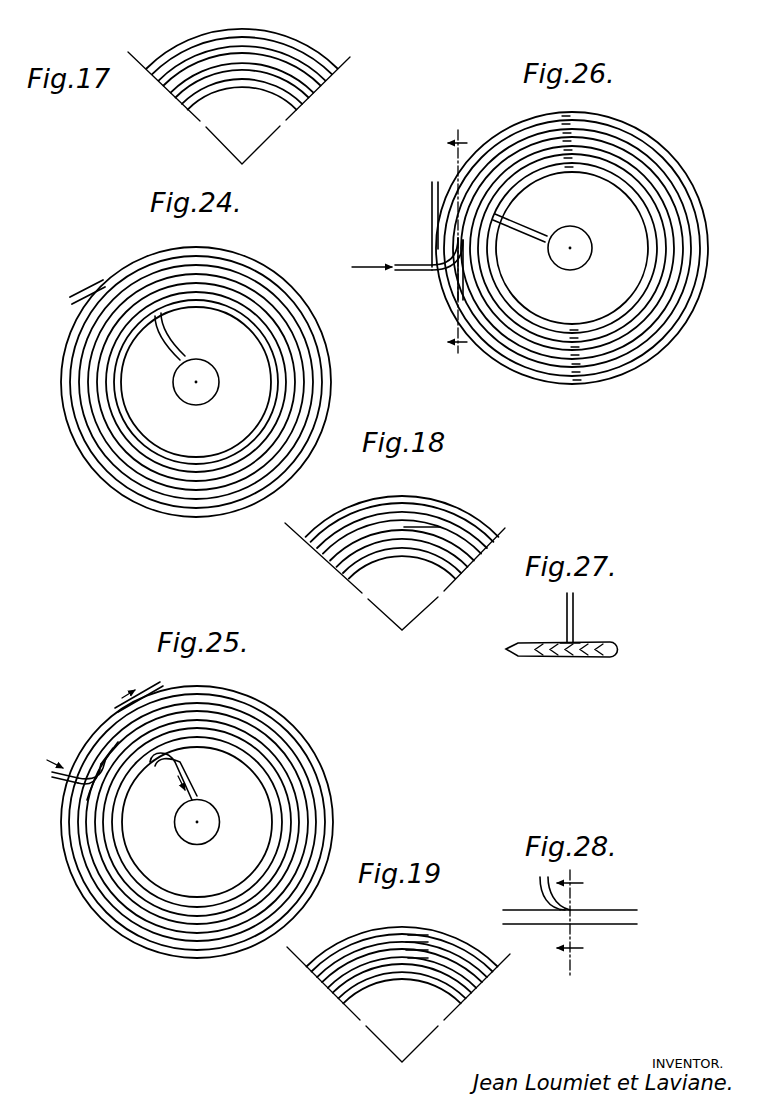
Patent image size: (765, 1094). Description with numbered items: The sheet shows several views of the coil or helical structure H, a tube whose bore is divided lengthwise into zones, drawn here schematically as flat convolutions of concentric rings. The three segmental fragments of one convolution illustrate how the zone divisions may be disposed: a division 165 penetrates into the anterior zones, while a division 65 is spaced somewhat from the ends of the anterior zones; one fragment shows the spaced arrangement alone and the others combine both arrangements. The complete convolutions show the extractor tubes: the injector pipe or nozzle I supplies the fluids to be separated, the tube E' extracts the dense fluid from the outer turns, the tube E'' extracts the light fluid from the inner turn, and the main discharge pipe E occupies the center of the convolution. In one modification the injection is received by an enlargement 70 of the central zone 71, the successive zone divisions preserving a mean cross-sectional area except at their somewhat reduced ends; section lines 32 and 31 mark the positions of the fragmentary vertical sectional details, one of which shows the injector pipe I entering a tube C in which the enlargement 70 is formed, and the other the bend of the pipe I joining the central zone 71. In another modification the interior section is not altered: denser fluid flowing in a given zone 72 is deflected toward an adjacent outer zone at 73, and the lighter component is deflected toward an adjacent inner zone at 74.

In FIG. 17, the zone division 65 is at (240, 31).
In FIG. 18, the zone division 65 is at (404, 548).
In FIG. 19, the zone division 65 is at (400, 958).
In FIG. 18, the zone division 165 is at (413, 528).
In FIG. 19, the zone division 165 is at (435, 925).
In FIG. 26, the enlargement 70 is at (453, 236).
In FIG. 27, the enlargement 70 is at (560, 656).
In FIG. 28, the enlargement 70 is at (571, 906).
In FIG. 26, the central zone 71 is at (460, 276).
In FIG. 28, the central zone 71 is at (633, 918).
In FIG. 25, the zone 72 is at (88, 802).
In FIG. 25, the outer deflection 73 is at (110, 745).
In FIG. 25, the inner deflection 74 is at (117, 757).
In FIG. 26, the section line 32- 32 is at (458, 242).
In FIG. 28, the section line 31- 31 is at (571, 921).
In FIG. 24, the helical structure H is at (257, 256).
In FIG. 26, the helical structure H is at (631, 120).
In FIG. 25, the helical structure H is at (277, 700).
In FIG. 24, the main discharge pipe E is at (206, 382).
In FIG. 26, the main discharge pipe E is at (570, 265).
In FIG. 25, the main discharge pipe E is at (209, 817).
In FIG. 24, the dense fluid extraction tube E' is at (81, 285).
In FIG. 26, the dense fluid extraction tube E' is at (415, 223).
In FIG. 25, the dense fluid extraction tube E' is at (139, 687).
In FIG. 24, the light fluid extraction tube E'' is at (179, 336).
In FIG. 26, the light fluid extraction tube E'' is at (528, 221).
In FIG. 25, the light fluid extraction tube E'' is at (179, 775).
In FIG. 26, the injector pipe I is at (420, 272).
In FIG. 27, the injector pipe I is at (576, 616).
In FIG. 25, the injector pipe I is at (52, 778).
In FIG. 28, the injector pipe I is at (540, 880).
In FIG. 27, the tube with internal chevrons C is at (542, 636).